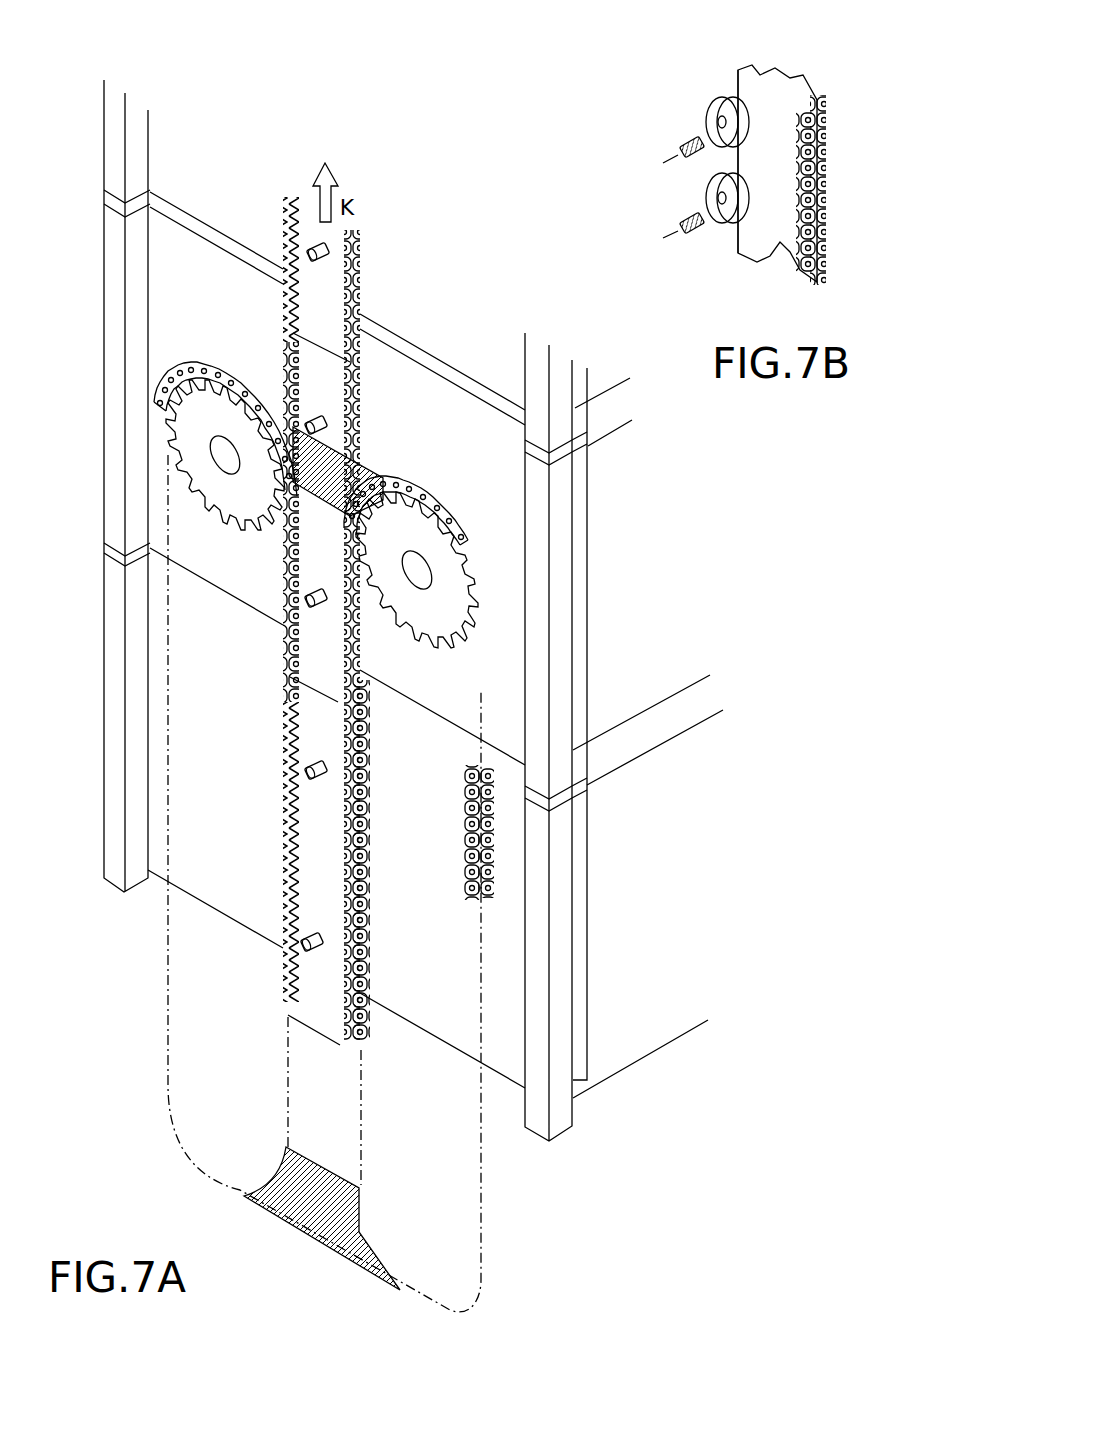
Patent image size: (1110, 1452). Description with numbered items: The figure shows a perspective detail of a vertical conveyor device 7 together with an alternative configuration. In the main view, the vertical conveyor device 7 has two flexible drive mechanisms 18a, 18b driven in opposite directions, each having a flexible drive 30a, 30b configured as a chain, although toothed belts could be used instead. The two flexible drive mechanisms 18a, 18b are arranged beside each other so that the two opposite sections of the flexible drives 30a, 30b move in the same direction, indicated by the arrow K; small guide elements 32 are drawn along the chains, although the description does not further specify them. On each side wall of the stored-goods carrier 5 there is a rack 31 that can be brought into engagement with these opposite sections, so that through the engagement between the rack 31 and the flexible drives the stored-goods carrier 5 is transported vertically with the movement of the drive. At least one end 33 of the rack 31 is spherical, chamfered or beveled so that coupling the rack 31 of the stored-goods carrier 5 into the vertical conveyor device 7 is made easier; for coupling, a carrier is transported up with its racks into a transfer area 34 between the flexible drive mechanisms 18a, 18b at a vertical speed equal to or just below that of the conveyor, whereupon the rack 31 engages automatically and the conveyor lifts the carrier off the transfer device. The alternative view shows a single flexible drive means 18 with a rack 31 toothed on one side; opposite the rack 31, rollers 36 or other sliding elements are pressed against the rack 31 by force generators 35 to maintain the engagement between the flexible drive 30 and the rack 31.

In FIG. 7A, the stored-goods carrier 5 is at (614, 368).
In FIG. 7A, the vertical conveyor device 7 is at (478, 518).
In FIG. 7A, the flexible drive mechanism 18a is at (165, 997).
In FIG. 7A, the flexible drive mechanism 18b is at (483, 679).
In FIG. 7B, the flexible drive means 18 is at (825, 163).
In FIG. 7B, the flexible drive 30 is at (803, 240).
In FIG. 7A, the flexible drive 30a is at (197, 372).
In FIG. 7A, the flexible drive 30b is at (442, 480).
In FIG. 7A, the rack 31 is at (335, 388).
In FIG. 7B, the rack 31 is at (775, 100).
In FIG. 7A, the guide roller 32 is at (323, 262).
In FIG. 7A, the end of the rack 33 is at (362, 364).
In FIG. 7A, the transfer area 34 is at (290, 418).
In FIG. 7B, the force generator 35 is at (687, 160).
In FIG. 7B, the roller 36 is at (712, 117).